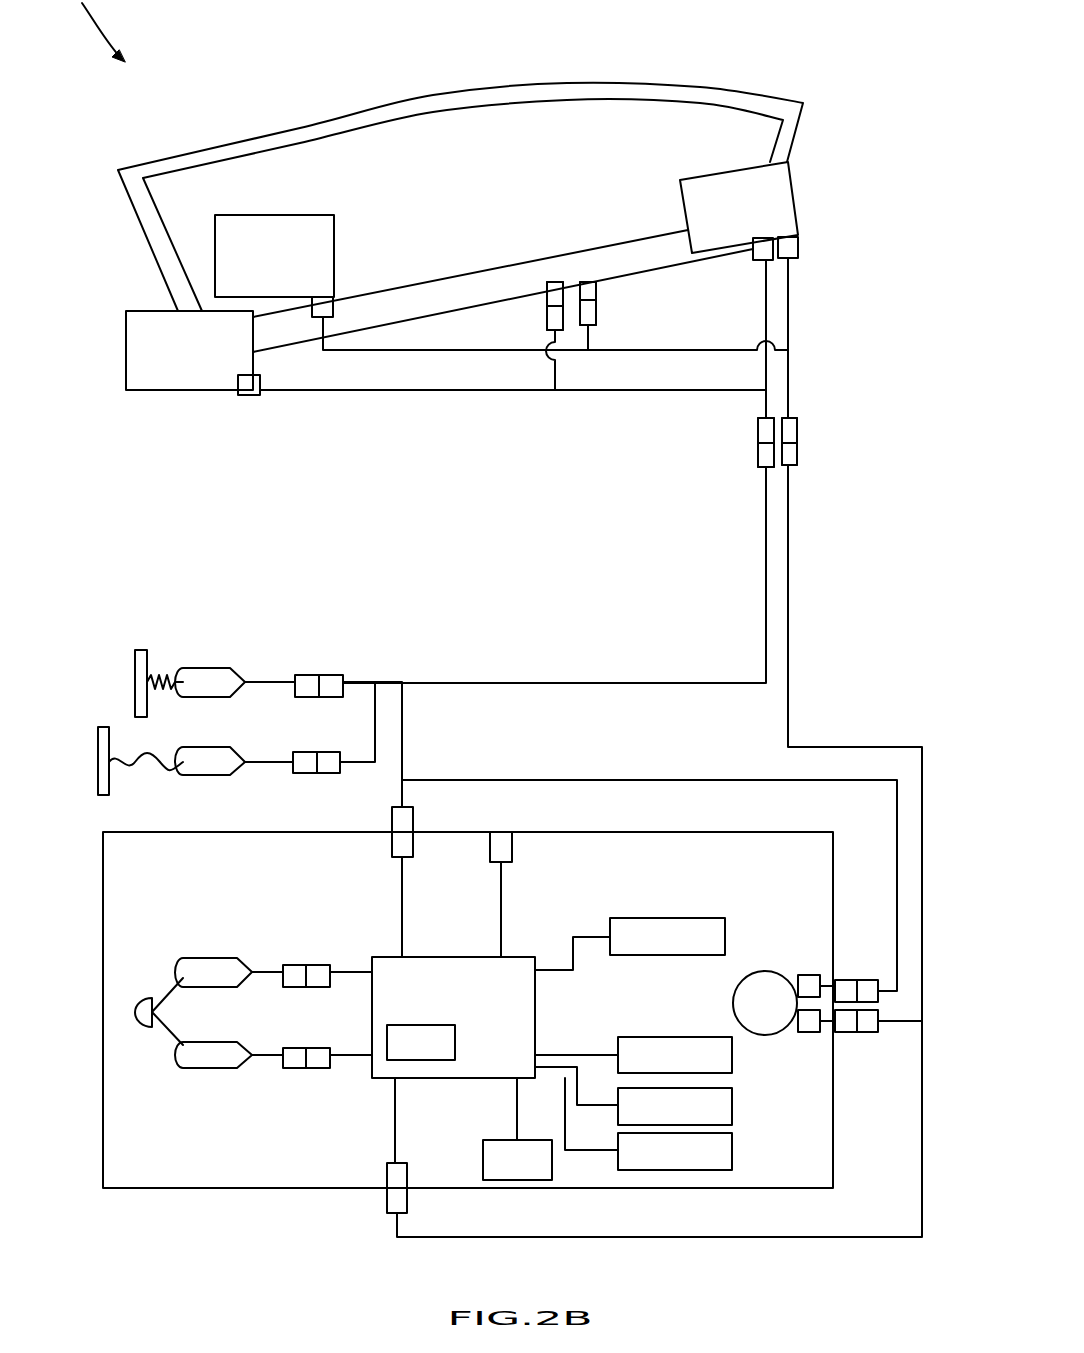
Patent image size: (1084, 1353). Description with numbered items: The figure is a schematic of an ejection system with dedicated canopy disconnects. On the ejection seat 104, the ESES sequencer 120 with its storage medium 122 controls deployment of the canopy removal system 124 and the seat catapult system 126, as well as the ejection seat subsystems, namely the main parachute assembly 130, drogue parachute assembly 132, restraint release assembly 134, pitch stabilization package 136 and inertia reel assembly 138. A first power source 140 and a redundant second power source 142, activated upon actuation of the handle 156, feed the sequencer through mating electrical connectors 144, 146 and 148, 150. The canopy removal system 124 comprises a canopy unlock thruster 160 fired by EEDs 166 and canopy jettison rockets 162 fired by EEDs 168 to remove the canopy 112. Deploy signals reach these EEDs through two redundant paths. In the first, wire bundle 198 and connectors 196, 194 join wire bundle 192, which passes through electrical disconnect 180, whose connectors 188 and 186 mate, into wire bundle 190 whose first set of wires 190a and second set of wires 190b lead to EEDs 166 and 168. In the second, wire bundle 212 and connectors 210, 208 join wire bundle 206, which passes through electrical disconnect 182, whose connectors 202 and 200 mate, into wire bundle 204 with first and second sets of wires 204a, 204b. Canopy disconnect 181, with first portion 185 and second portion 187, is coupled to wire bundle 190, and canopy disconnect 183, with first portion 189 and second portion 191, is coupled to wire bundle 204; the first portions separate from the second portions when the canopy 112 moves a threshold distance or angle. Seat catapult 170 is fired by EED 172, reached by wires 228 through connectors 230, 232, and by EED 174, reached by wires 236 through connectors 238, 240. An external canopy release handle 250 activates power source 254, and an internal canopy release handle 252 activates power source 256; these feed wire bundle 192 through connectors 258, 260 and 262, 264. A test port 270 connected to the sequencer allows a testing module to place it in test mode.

The ejection seat 104 is at (139, 882).
The canopy 112 is at (513, 100).
The ESES sequencer 120 is at (437, 1012).
The storage medium 122 is at (400, 1055).
The canopy removal system 124 is at (234, 110).
The seat catapult system 126 is at (780, 960).
The main parachute assembly 130 is at (649, 949).
The drogue parachute assembly 132 is at (657, 1067).
The restraint release assembly 134 is at (657, 1119).
The pitch stabilization package 136 is at (657, 1164).
The inertia reel assembly 138 is at (499, 1172).
The first power source 140 is at (218, 1065).
The second power source 142 is at (222, 962).
The electrical connector 144 is at (292, 965).
The electrical connector 146 is at (318, 965).
The electrical connector 148 is at (292, 1068).
The electrical connector 150 is at (320, 1068).
The handle 156 is at (135, 1012).
The canopy unlock thruster 160 is at (722, 220).
The canopy jettison rockets 162 is at (257, 266).
The electronic-explosive devices 166 is at (764, 247).
The electronic-explosive devices 168 is at (330, 305).
The seat catapult 170 is at (747, 1015).
The EED 172 is at (808, 978).
The EED 174 is at (810, 1032).
The electrical disconnect 180 is at (682, 455).
The canopy disconnect 181 is at (458, 240).
The electrical disconnect 182 is at (886, 420).
The canopy disconnect 183 is at (656, 278).
The first portion 185 is at (550, 292).
The electrical connector 186 is at (762, 432).
The second portion 187 is at (550, 320).
The electrical connector 188 is at (765, 455).
The first portion 189 is at (587, 292).
The wire bundle 190 is at (675, 418).
The first set of wires 190a is at (764, 368).
The second set of wires 190b is at (535, 392).
The second portion 191 is at (587, 315).
The wire bundle 192 is at (636, 680).
The electrical connector 194 is at (405, 815).
The electrical connector 196 is at (405, 848).
The wire bundle 198 is at (400, 893).
The electrical connector 200 is at (793, 432).
The electrical connector 202 is at (793, 458).
The wire bundle 204 is at (874, 285).
The first set of wires 204a is at (792, 290).
The second set of wires 204b is at (792, 340).
The wire bundle 206 is at (790, 700).
The electrical connector 208 is at (388, 1205).
The electrical connector 210 is at (388, 1172).
The wire bundle 212 is at (398, 1115).
The wires 228 is at (598, 778).
The electrical connector 230 is at (868, 982).
The electrical connector 232 is at (845, 980).
The wires 236 is at (905, 1023).
The electrical connector 238 is at (868, 1032).
The electrical connector 240 is at (845, 1032).
The external canopy release handle 250 is at (142, 655).
The internal canopy release handle 252 is at (104, 733).
The power source 254 is at (205, 668).
The power source 256 is at (205, 772).
The electrical connector 258 is at (307, 675).
The electrical connector 260 is at (330, 675).
The electrical connector 262 is at (305, 773).
The electrical connector 264 is at (330, 773).
The test port 270 is at (510, 850).